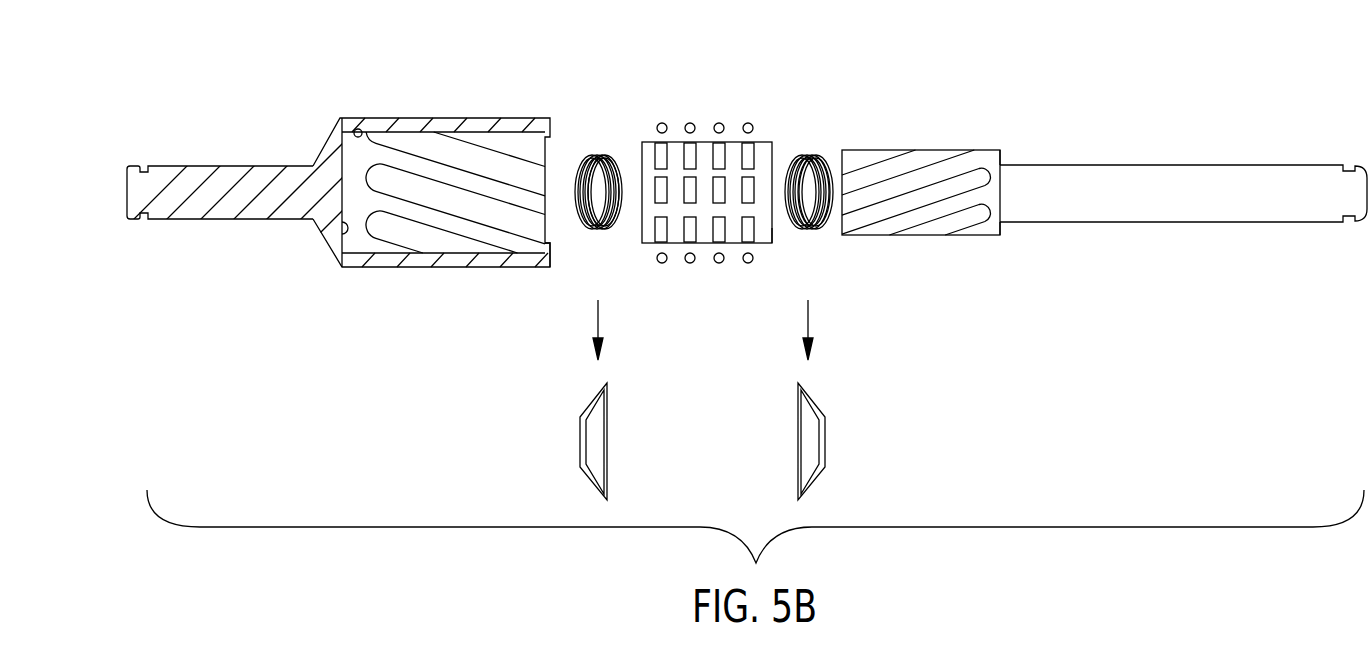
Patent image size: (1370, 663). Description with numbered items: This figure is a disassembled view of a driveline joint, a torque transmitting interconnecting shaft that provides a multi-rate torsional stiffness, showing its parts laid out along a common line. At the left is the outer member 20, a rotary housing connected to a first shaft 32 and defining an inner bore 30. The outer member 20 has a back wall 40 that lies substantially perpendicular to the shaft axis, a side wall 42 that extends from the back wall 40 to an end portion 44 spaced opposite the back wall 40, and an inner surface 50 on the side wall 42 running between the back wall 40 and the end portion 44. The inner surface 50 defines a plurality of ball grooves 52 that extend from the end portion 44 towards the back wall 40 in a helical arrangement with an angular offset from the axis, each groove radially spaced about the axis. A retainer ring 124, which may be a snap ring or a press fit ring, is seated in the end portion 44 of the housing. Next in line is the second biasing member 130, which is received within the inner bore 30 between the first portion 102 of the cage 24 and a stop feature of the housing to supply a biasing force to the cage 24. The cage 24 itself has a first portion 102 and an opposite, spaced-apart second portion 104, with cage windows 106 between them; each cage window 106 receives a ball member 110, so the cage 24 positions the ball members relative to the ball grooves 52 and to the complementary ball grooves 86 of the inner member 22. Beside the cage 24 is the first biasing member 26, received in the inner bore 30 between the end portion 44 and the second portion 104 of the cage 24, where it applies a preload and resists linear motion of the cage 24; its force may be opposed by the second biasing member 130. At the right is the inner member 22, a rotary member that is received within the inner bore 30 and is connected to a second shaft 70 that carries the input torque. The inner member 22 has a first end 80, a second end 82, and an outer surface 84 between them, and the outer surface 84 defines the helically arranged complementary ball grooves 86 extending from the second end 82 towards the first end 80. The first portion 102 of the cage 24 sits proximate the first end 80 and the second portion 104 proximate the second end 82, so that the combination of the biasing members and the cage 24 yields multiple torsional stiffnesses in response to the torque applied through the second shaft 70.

The outer member 20 is at (316, 124).
The first shaft 32 is at (228, 178).
The side wall 42 is at (386, 122).
The end portion 44 is at (527, 122).
The inner surface 50 is at (360, 128).
The back wall 40 is at (342, 230).
The inner bore 30 is at (543, 148).
The plurality of ball grooves 52 is at (396, 232).
The retainer ring 124 is at (550, 252).
The second biasing member 130 is at (603, 232).
The cage 24 is at (776, 130).
The first portion 102 is at (641, 150).
The cage window 106 is at (690, 150).
The ball member 110 is at (690, 264).
The second portion 104 is at (773, 228).
The first biasing member 26 is at (810, 156).
The inner member 22 is at (1032, 145).
The first end 80 is at (836, 232).
The plurality of complementary ball grooves 86 is at (952, 223).
The outer surface 84 is at (993, 223).
The second end 82 is at (1002, 230).
The second shaft 70 is at (1145, 188).